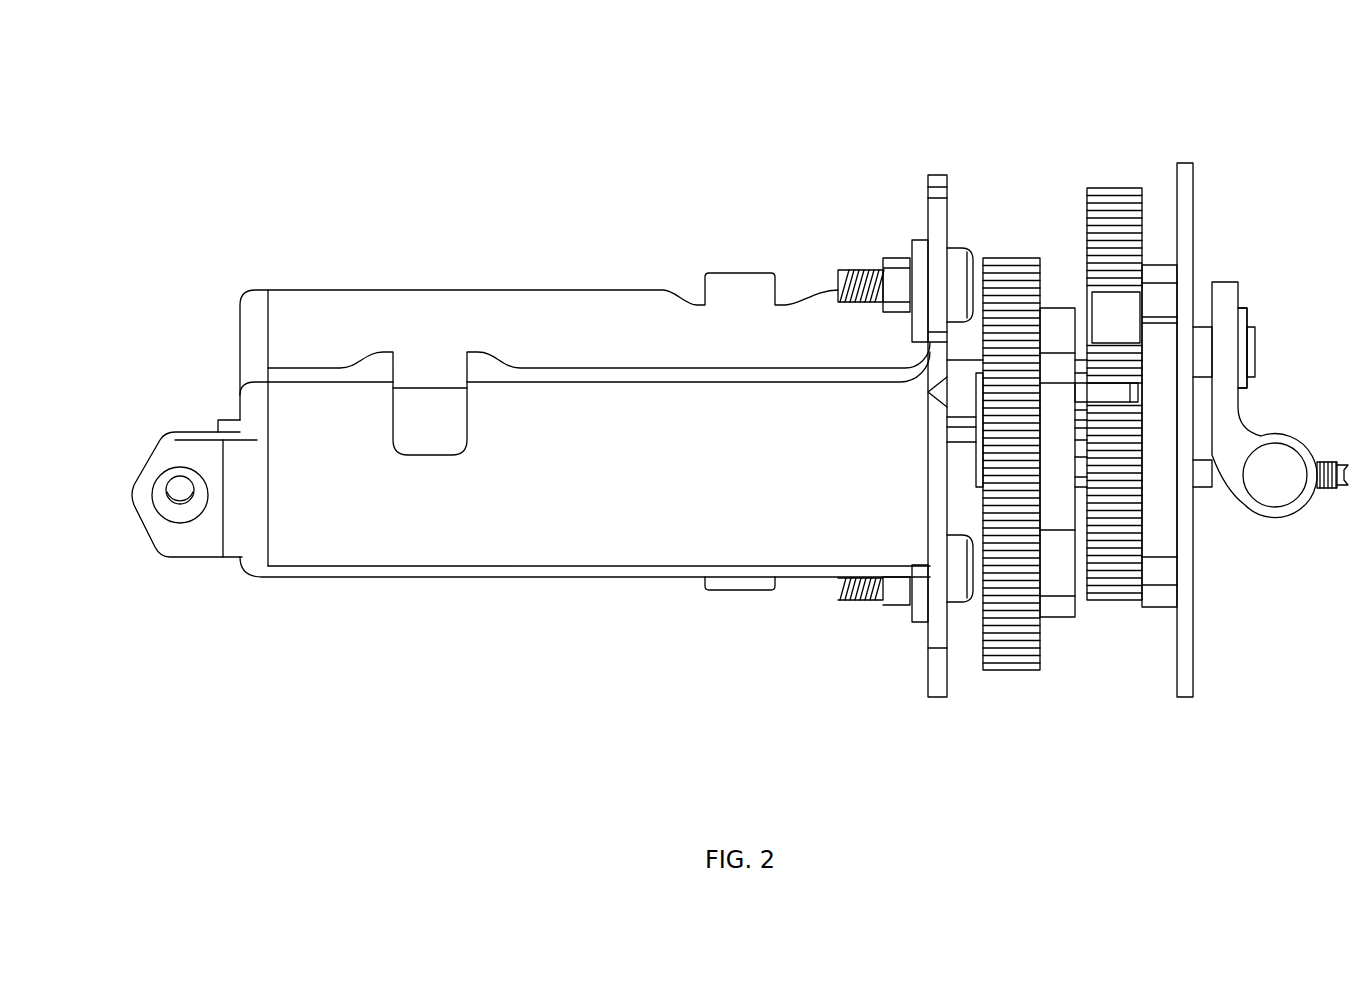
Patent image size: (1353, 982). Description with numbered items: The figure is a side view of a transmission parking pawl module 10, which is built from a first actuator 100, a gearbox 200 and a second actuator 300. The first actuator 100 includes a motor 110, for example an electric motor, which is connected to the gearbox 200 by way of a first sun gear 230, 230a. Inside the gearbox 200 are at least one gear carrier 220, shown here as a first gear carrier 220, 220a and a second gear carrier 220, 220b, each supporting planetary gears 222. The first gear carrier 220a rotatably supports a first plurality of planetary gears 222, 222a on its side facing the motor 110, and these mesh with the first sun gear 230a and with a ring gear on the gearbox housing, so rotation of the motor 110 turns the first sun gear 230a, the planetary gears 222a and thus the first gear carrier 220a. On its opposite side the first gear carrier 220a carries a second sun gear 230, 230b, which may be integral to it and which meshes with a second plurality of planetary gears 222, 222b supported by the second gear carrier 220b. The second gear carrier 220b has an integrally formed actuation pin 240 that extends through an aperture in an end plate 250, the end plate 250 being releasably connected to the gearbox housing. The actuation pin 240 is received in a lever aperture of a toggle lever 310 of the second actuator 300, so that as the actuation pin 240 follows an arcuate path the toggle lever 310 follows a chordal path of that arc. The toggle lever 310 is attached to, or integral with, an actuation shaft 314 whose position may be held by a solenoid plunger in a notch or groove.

The parking pawl module 10 is at (860, 96).
The first actuator 100 is at (137, 728).
The motor 110 is at (413, 553).
The gearbox 200 is at (1215, 727).
The gear carrier 220 is at (1110, 491).
The first gear carrier 220a is at (1062, 618).
The second gear carrier 220b is at (1155, 607).
The planetary gears 222 is at (1063, 389).
The first plurality of planetary gears 222a is at (1011, 258).
The second plurality of planetary gears 222b is at (1113, 188).
The sun gear 230 is at (1109, 423).
The first sun gear 230a is at (987, 470).
The second sun gear 230b is at (1120, 393).
The actuation pin 240 is at (1247, 358).
The end plate 250 is at (1203, 610).
The second actuator 300 is at (1340, 668).
The toggle lever 310 is at (1245, 435).
The actuation shaft 314 is at (1282, 497).